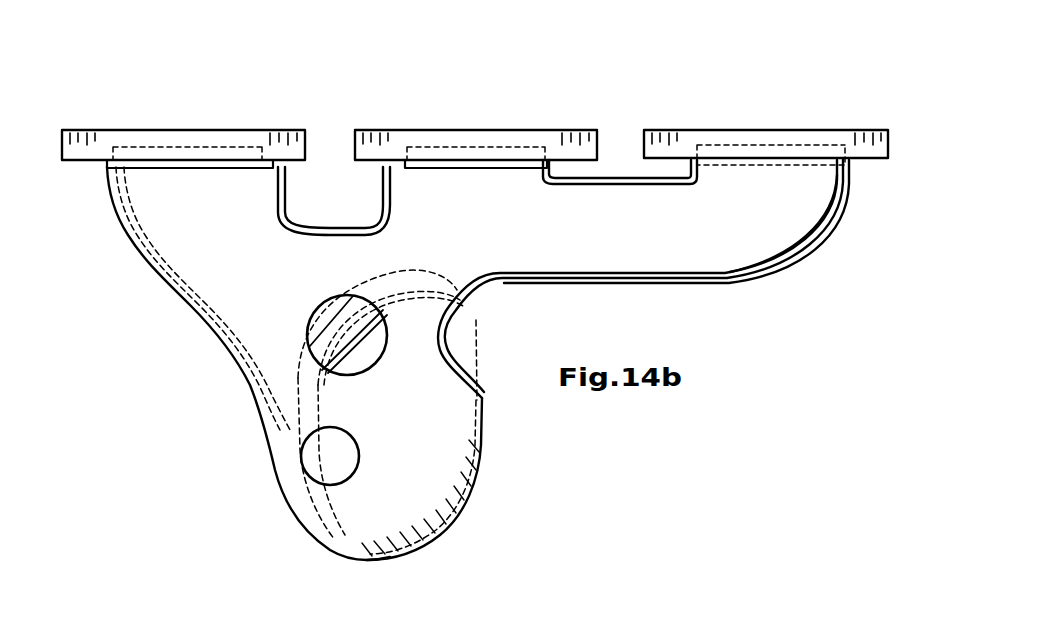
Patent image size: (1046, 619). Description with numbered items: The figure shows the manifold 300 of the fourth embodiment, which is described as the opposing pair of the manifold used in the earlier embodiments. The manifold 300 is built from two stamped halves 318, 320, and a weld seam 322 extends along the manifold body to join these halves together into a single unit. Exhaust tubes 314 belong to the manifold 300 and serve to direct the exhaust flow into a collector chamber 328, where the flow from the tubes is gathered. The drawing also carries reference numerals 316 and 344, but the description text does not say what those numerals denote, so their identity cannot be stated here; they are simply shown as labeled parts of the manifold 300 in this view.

The manifold 300 is at (770, 88).
The exhaust tubes 314 is at (255, 188).
The electrode plate 316 is at (283, 148).
The stamped half 318 is at (276, 350).
The stamped half 320 is at (285, 440).
The weld seam 322 is at (170, 286).
The collector chamber 328 is at (390, 415).
The curved strip portion 344 is at (780, 208).